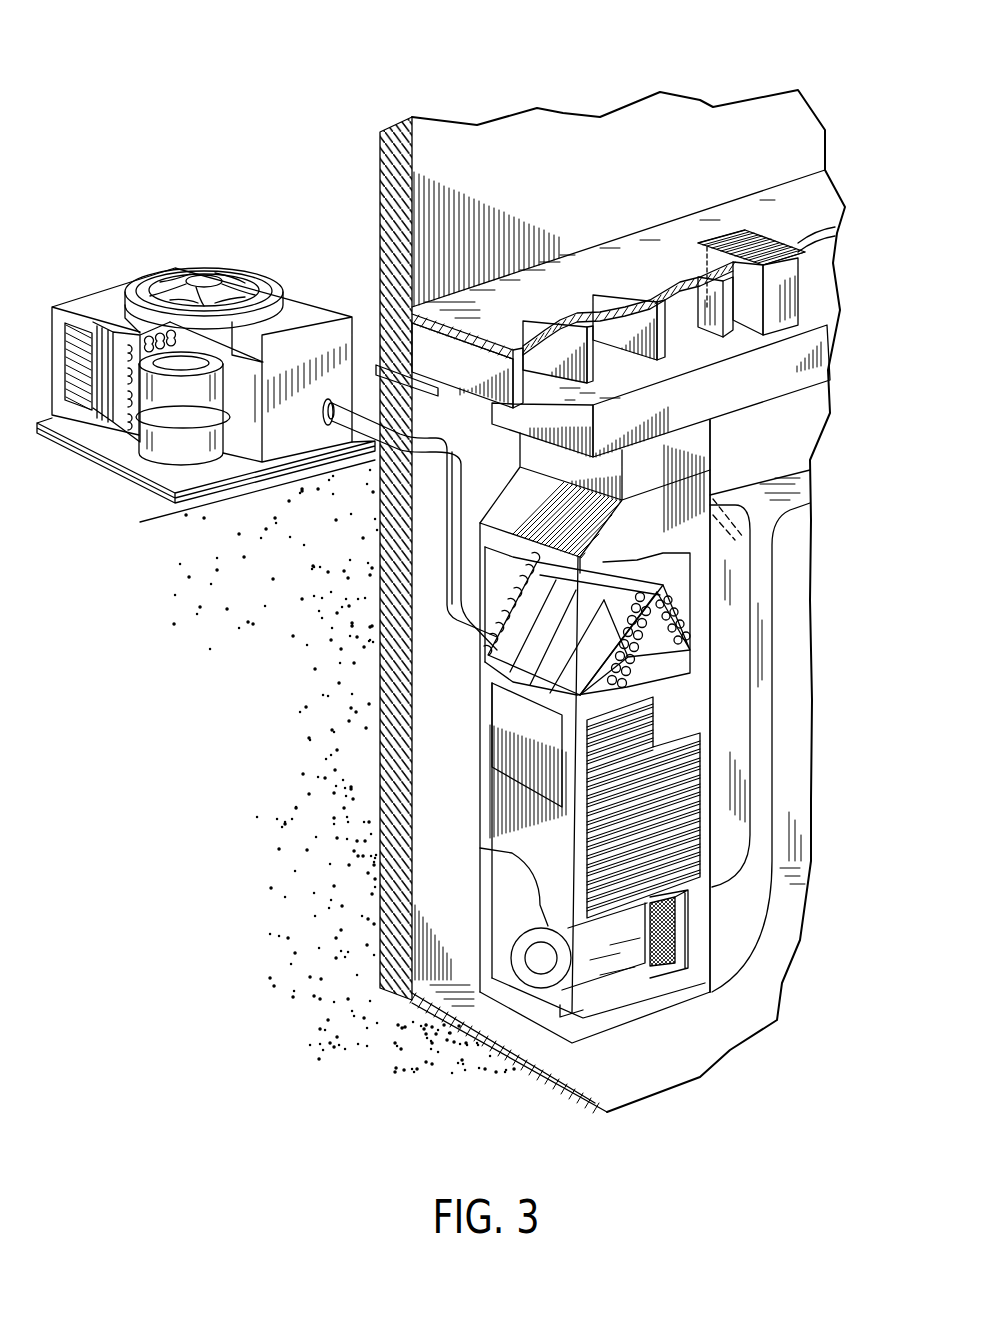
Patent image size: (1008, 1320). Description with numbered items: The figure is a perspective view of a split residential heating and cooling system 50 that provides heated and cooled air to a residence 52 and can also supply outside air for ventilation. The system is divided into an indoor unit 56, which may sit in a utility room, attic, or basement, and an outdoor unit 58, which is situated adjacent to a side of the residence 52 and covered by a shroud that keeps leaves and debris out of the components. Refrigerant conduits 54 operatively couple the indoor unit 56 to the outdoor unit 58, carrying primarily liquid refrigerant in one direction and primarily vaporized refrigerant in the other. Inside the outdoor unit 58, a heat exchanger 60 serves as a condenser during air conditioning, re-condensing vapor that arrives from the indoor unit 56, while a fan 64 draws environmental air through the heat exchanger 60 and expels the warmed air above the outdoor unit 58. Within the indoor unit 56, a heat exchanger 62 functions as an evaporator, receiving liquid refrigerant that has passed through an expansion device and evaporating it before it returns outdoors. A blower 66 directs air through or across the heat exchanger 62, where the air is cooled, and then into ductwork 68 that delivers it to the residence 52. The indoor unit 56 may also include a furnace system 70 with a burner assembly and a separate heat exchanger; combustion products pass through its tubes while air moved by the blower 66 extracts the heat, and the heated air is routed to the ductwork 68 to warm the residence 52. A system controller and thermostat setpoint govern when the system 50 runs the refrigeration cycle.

The residential heating and cooling system 50 is at (203, 87).
The residence 52 is at (520, 140).
The refrigerant conduits 54 is at (453, 532).
The indoor unit 56 is at (458, 788).
The outdoor unit 58 is at (158, 256).
The heat exchanger 60 is at (128, 338).
The heat exchanger 62 is at (542, 653).
The fan 64 is at (222, 280).
The blower 66 is at (532, 982).
The ductwork 68 is at (855, 420).
The furnace system 70 is at (490, 735).